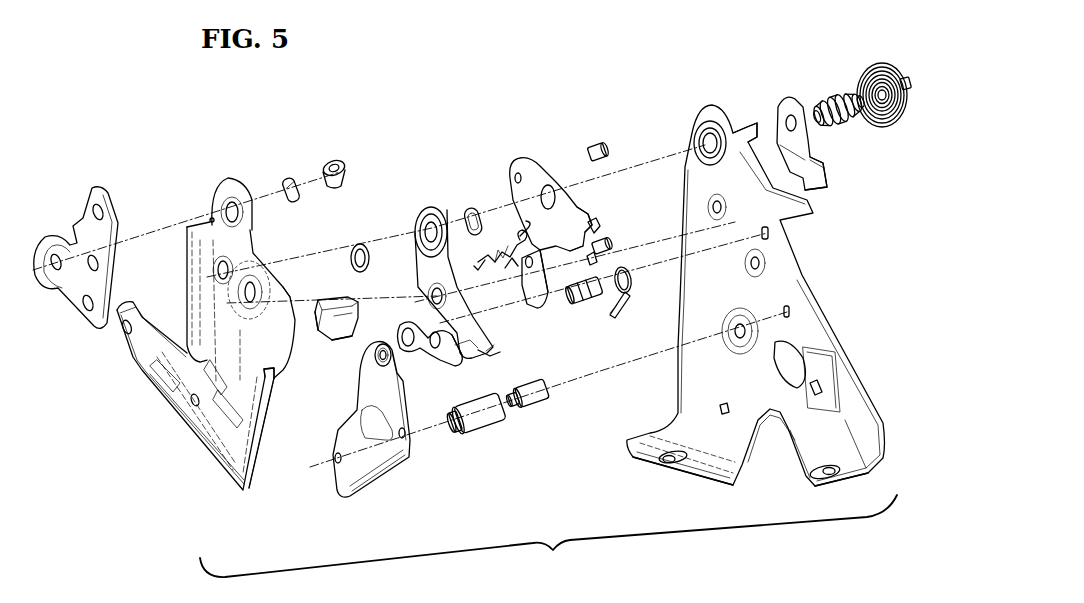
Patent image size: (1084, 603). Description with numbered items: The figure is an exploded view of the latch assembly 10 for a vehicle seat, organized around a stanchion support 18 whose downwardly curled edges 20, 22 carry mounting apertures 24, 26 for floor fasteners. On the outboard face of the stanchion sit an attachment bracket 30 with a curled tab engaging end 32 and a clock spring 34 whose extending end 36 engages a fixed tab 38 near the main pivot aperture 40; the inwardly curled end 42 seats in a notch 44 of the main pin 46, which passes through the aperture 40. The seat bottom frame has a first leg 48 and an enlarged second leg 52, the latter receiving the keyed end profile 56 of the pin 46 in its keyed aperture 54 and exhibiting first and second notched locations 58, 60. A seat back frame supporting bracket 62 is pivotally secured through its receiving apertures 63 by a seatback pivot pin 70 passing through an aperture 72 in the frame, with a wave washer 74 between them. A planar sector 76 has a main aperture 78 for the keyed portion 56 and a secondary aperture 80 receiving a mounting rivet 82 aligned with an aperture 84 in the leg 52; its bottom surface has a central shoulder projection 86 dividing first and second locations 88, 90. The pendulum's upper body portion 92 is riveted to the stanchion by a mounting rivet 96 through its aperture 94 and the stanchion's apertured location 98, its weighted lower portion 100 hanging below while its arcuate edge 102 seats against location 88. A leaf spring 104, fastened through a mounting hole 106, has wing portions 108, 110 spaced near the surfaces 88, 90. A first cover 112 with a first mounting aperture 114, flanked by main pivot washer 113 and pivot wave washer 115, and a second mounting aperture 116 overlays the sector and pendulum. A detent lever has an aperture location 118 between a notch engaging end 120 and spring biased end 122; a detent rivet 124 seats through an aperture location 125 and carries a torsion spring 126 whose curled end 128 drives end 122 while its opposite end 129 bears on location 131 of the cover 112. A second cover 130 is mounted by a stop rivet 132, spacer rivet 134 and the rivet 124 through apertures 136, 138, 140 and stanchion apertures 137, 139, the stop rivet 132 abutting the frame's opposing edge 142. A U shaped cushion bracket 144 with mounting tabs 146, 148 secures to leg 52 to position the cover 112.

The latch assembly 10 is at (548, 536).
The stanchion support 18 is at (743, 301).
The downwardly curled edge 20 is at (636, 448).
The downwardly curled edge 22 is at (800, 470).
The mounting aperture 24 is at (668, 462).
The mounting aperture 26 is at (840, 472).
The outboard side attachment bracket 30 is at (807, 141).
The curled tab engaging end 32 is at (825, 188).
The clock spring 34 is at (870, 71).
The extending end 36 is at (905, 78).
The fixed tab 38 is at (753, 125).
The main pivot aperture 40 is at (705, 143).
The inwardly curled end 42 is at (830, 98).
The notch 44 is at (861, 101).
The main pin 46 is at (837, 103).
The first leg 48 is at (207, 413).
The second enlarged dimension leg 52 is at (236, 277).
The keyed aperture 54 is at (250, 302).
The keyed end profile 56 is at (817, 116).
The first notched location 58 is at (276, 380).
The second notched location 60 is at (297, 312).
The seat back frame supporting bracket 62 is at (76, 258).
The receiving aperture 63 is at (53, 254).
The seatback pivot pin 70 is at (327, 163).
The aperture 72 is at (225, 205).
The wave washer 74 is at (287, 180).
The sector 76 is at (542, 202).
The first (main) aperture 78 is at (562, 197).
The secondary aperture 80 is at (515, 174).
The secondary mounting rivet 82 is at (593, 146).
The aperture 84 is at (232, 262).
The central shoulder projection 86 is at (593, 259).
The first subset location 88 is at (578, 254).
The second subset location 90 is at (598, 221).
The upper body portion 92 is at (525, 266).
The aperture 94 is at (536, 278).
The mounting rivet 96 is at (608, 250).
The apertured location 98 is at (723, 209).
The weighted lower portion 100 is at (534, 295).
The upper arcuate edge configuration 102 is at (510, 276).
The inertial responsive leaf spring 104 is at (489, 251).
The mounting hole 106 is at (575, 225).
The first wing portion 108 is at (478, 276).
The second wing portion 110 is at (520, 232).
The first cover 112 is at (436, 267).
The main pivot washer 113 is at (366, 248).
The first mounting aperture 114 is at (420, 210).
The pivot wave washer 115 is at (474, 208).
The second mounting aperture 116 is at (432, 295).
The aperture location 118 is at (436, 350).
The notch engaging end 120 is at (433, 349).
The spring biased end 122 is at (455, 366).
The detent rivet 124 is at (592, 293).
The aperture location 125 is at (770, 238).
The secondary torsion spring 126 is at (632, 286).
The curled end 128 is at (625, 300).
The opposite extending end 129 is at (612, 312).
The second cover 130 is at (367, 427).
The location 131 is at (490, 358).
The stop rivet 132 is at (478, 427).
The spacer rivet 134 is at (530, 406).
The aperture 136 is at (337, 462).
The aperture 137 is at (735, 336).
The aperture 138 is at (395, 455).
The aperture 139 is at (790, 312).
The aperture 140 is at (375, 357).
The configured opposing edge 142 is at (258, 470).
The U shaped plastic attachment/cushion bracket 144 is at (331, 329).
The mounting tab 146 is at (318, 325).
The mounting tab 148 is at (336, 350).